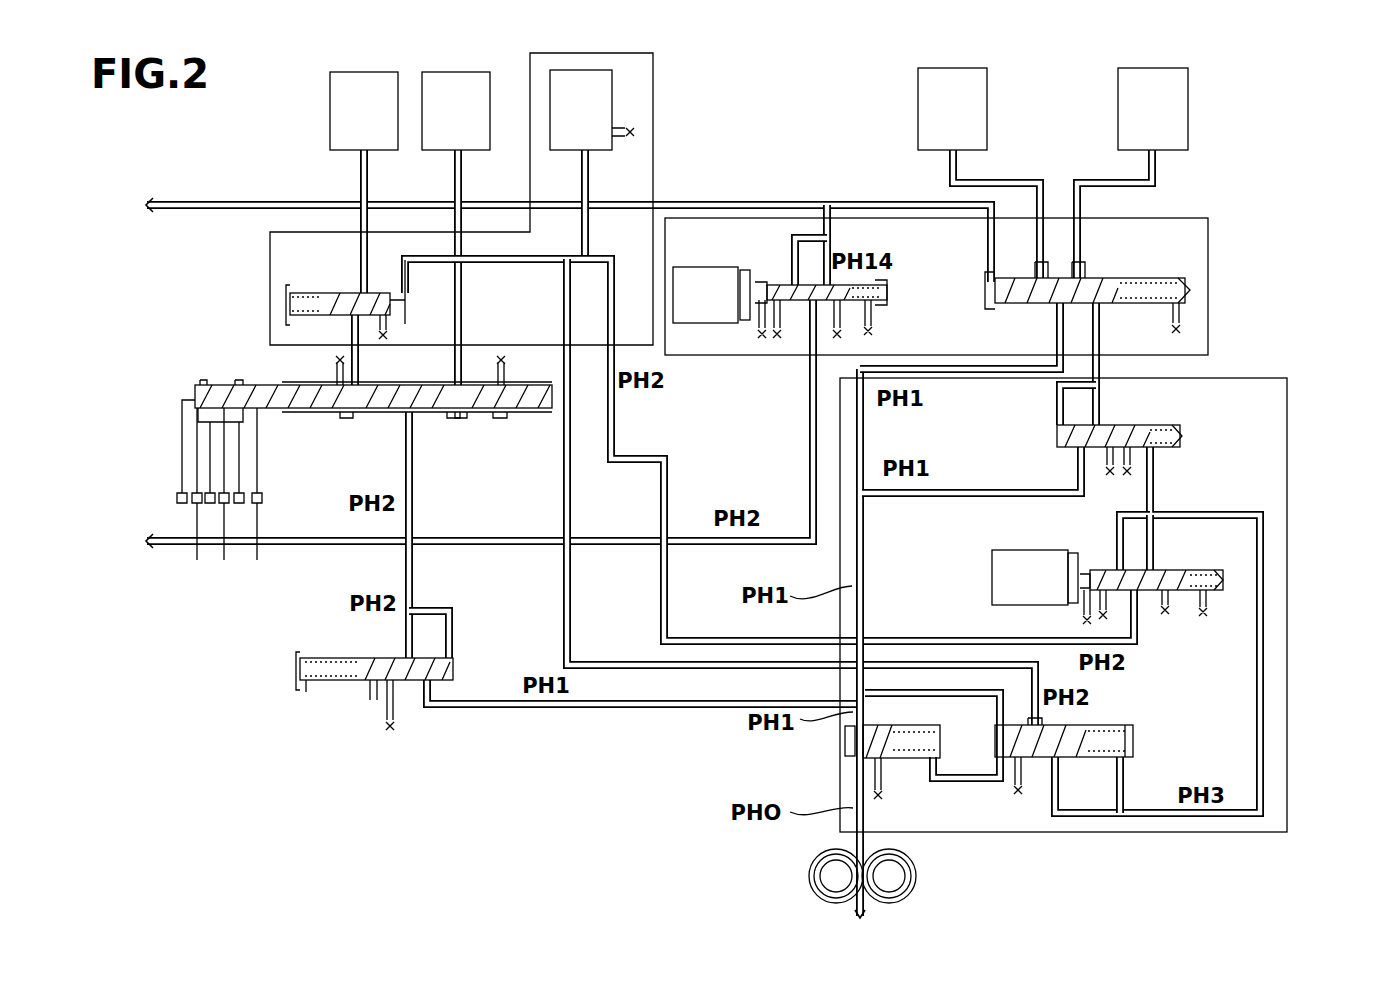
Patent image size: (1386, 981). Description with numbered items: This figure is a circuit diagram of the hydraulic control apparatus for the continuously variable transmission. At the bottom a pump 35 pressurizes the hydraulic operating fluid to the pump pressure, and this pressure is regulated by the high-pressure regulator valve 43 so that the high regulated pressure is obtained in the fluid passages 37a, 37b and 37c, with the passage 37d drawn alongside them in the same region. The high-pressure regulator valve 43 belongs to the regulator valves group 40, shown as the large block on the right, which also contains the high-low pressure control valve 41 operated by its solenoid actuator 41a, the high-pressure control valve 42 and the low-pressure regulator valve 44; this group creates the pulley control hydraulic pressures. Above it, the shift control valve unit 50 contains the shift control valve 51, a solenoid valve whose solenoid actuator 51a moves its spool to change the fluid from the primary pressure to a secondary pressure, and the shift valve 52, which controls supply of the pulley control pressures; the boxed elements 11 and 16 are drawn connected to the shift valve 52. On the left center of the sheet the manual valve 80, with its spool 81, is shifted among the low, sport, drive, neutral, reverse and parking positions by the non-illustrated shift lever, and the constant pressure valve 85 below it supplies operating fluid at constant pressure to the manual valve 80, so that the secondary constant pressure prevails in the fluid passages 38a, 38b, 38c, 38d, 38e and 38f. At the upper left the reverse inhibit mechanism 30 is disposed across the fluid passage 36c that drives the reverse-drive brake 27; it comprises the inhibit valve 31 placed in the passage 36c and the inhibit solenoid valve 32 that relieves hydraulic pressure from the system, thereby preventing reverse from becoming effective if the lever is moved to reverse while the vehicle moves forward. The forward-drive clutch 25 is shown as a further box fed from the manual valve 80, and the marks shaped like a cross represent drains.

The engine 11 is at (1153, 109).
The transmission 16 is at (952, 109).
The forward-drive clutch 25 is at (456, 111).
The reverse-drive brake 27 is at (364, 111).
The reverse inhibit mechanism 30 is at (653, 90).
The inhibit valve 31 is at (272, 306).
The inhibit solenoid valve 32 is at (592, 110).
The pump 35 is at (808, 873).
The fluid passage 36c is at (358, 166).
The fluid passage 37a is at (553, 708).
The fluid passage 37b is at (863, 529).
The fluid passage 37c is at (1012, 482).
The oil passage 37d is at (952, 378).
The fluid passage 38a is at (418, 580).
The fluid passage 38b is at (418, 498).
The fluid passage 38c is at (810, 456).
The fluid passage 38d is at (614, 413).
The fluid passage 38e is at (1056, 628).
The fluid passage 38f is at (968, 650).
The regulator valves group 40 is at (1290, 426).
The high-low pressure control valve 41 is at (1184, 624).
The solenoid actuator 41a is at (992, 578).
The high-pressure control valve 42 is at (1150, 742).
The high-pressure regulator valve 43 is at (838, 748).
The low-pressure regulator valve 44 is at (1194, 428).
The shift control valve unit 50 is at (1210, 228).
The shift control valve 51 is at (768, 244).
The solenoid actuator 51a is at (697, 266).
The shift valve 52 is at (1212, 292).
The manual valve 80 is at (385, 438).
The spool 81 is at (450, 413).
The constant pressure valve 85 is at (355, 706).